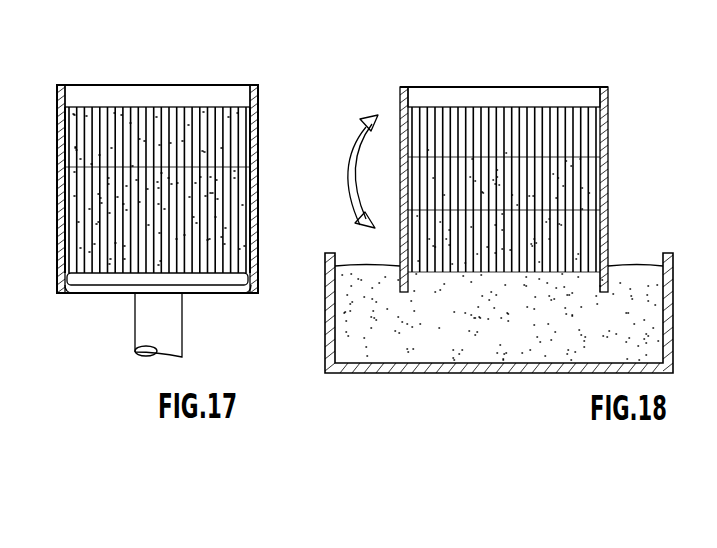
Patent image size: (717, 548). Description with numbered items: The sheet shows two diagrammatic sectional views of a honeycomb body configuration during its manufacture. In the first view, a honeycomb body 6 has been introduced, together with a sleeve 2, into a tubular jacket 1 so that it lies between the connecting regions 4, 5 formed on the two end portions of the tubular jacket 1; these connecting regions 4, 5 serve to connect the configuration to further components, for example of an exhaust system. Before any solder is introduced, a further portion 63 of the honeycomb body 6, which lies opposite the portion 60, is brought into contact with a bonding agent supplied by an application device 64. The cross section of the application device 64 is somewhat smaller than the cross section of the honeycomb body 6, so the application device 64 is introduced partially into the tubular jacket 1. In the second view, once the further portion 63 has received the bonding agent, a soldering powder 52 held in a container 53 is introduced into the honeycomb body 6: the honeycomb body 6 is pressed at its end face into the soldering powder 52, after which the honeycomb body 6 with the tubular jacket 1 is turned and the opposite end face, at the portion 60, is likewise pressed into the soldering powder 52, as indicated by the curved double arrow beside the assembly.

In FIG. 17, the tubular jacket 1 is at (152, 85).
In FIG. 18, the tubular jacket 1 is at (492, 87).
In FIG. 17, the sleeve 2 is at (57, 138).
In FIG. 18, the connecting region 4 is at (435, 97).
In FIG. 17, the connecting region 5 is at (88, 95).
In FIG. 17, the honeycomb body 6 is at (207, 112).
In FIG. 18, the honeycomb body 6 is at (545, 130).
In FIG. 18, the soldering powder 52 is at (383, 347).
In FIG. 18, the container 53 is at (325, 362).
In FIG. 18, the portion 60 is at (583, 262).
In FIG. 17, the further portion 63 is at (98, 250).
In FIG. 18, the further portion 63 is at (597, 128).
In FIG. 17, the application device 64 is at (108, 277).